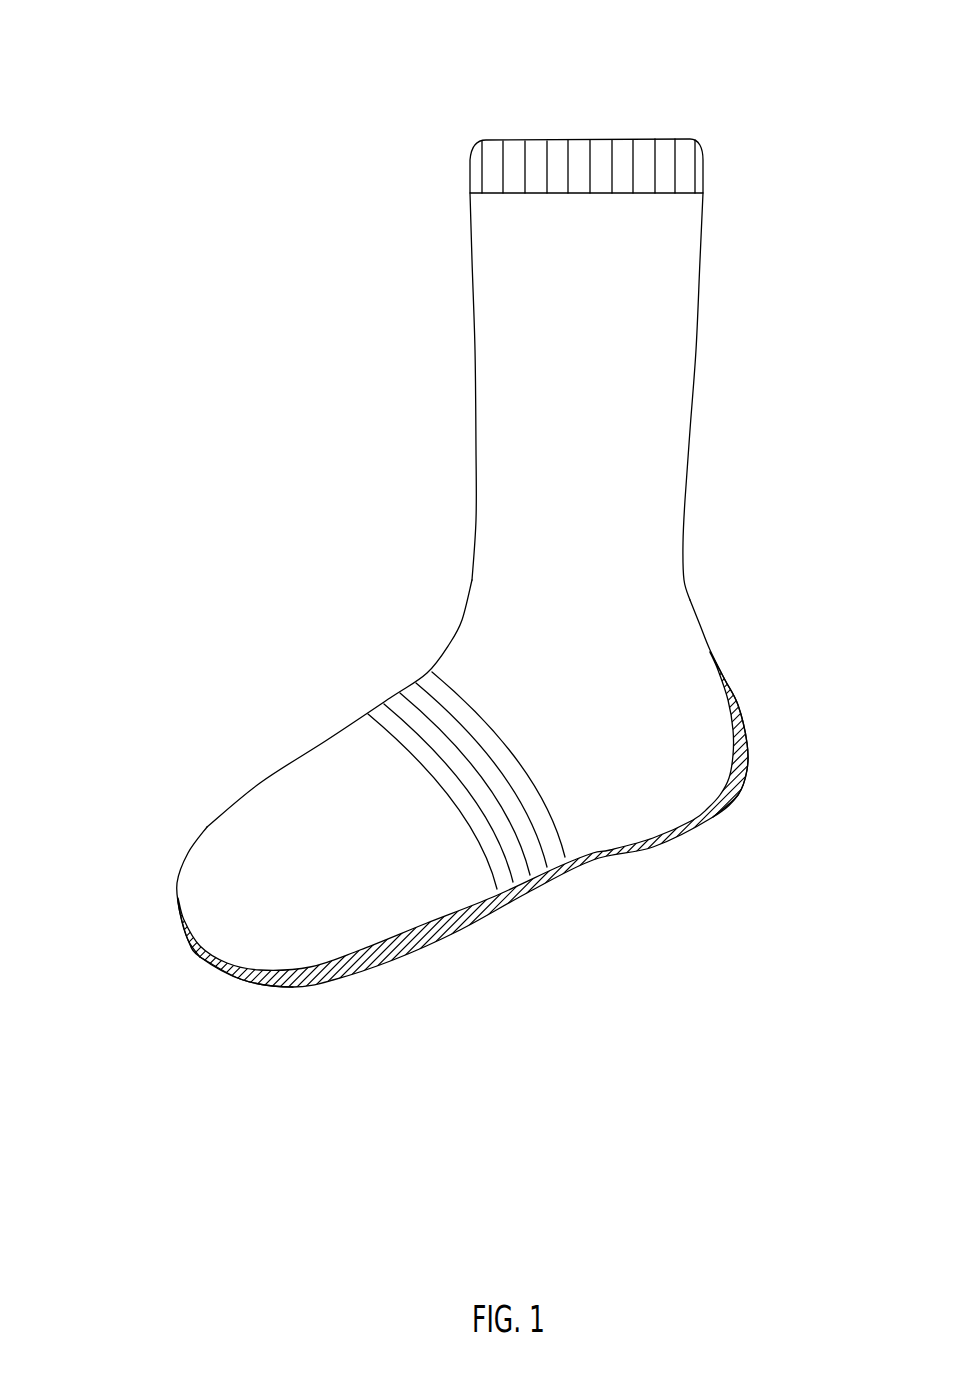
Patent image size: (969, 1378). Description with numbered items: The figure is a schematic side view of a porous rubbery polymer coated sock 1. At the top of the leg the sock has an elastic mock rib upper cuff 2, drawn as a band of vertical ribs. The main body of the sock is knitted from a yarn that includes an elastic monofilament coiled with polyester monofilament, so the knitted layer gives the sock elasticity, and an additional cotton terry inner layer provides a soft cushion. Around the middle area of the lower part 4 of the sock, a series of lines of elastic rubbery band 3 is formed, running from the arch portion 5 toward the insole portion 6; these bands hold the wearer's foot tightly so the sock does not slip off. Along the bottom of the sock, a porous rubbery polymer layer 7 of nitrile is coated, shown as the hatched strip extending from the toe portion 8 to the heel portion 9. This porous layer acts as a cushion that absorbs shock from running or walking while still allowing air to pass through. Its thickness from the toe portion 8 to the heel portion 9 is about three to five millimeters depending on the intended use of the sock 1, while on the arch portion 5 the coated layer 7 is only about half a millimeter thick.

The porous rubbery polymer coated sock 1 is at (685, 80).
The elastic mock rib upper cuff 2 is at (688, 165).
The elastic rubbery band 3 is at (404, 704).
The lower part 4 is at (738, 620).
The arch portion 5 is at (578, 837).
The insole portion 6 is at (345, 748).
The porous rubbery polymer layer 7 is at (183, 937).
The toe portion 8 is at (203, 860).
The heel portion 9 is at (713, 742).